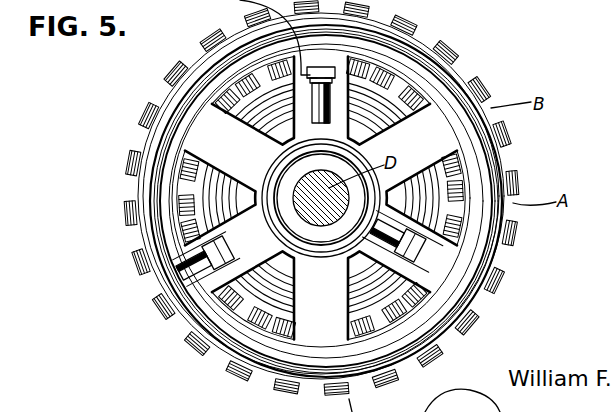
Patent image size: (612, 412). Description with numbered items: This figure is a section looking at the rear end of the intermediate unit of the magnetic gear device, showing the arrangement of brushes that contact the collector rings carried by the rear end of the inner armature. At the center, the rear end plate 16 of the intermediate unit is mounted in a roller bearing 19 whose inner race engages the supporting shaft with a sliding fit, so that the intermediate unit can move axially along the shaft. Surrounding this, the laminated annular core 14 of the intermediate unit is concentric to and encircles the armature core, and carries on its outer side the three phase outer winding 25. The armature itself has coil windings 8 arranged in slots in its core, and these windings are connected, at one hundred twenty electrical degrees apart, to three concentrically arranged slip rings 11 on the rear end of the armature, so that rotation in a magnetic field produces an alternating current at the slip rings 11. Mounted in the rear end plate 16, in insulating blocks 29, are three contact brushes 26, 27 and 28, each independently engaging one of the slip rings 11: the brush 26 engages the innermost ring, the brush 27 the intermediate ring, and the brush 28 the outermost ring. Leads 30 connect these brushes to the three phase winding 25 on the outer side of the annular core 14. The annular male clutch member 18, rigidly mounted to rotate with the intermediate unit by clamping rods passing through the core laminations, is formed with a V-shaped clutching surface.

The coil windings 8 is at (411, 97).
The slip rings 11 is at (353, 316).
The laminated annular core 14 is at (135, 184).
The rear end plate 16 is at (430, 130).
The annular male clutch member 18 is at (157, 134).
The roller bearing 19 is at (296, 178).
The outer winding 25 is at (172, 66).
The contact brush 26 is at (421, 258).
The contact brush 27 is at (228, 257).
The contact brush 28 is at (321, 68).
The insulating blocks 29 is at (323, 108).
The leads 30 is at (463, 248).